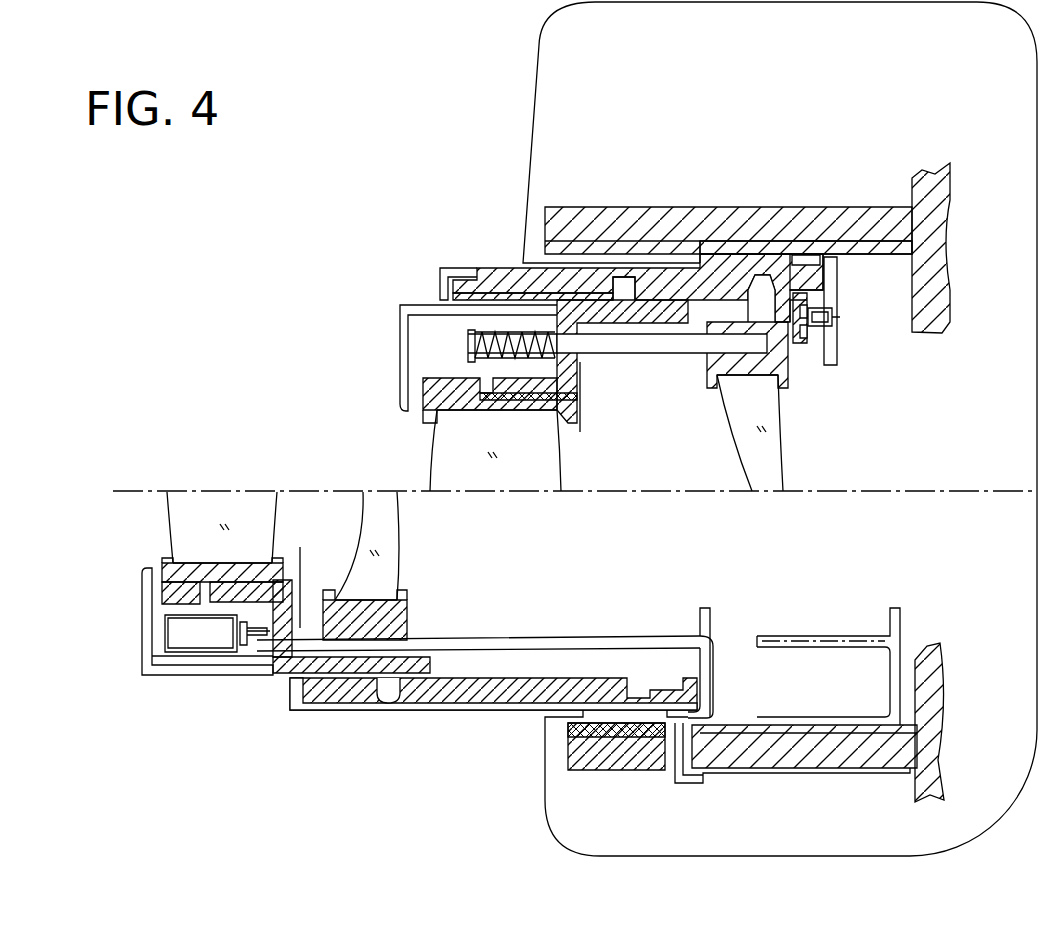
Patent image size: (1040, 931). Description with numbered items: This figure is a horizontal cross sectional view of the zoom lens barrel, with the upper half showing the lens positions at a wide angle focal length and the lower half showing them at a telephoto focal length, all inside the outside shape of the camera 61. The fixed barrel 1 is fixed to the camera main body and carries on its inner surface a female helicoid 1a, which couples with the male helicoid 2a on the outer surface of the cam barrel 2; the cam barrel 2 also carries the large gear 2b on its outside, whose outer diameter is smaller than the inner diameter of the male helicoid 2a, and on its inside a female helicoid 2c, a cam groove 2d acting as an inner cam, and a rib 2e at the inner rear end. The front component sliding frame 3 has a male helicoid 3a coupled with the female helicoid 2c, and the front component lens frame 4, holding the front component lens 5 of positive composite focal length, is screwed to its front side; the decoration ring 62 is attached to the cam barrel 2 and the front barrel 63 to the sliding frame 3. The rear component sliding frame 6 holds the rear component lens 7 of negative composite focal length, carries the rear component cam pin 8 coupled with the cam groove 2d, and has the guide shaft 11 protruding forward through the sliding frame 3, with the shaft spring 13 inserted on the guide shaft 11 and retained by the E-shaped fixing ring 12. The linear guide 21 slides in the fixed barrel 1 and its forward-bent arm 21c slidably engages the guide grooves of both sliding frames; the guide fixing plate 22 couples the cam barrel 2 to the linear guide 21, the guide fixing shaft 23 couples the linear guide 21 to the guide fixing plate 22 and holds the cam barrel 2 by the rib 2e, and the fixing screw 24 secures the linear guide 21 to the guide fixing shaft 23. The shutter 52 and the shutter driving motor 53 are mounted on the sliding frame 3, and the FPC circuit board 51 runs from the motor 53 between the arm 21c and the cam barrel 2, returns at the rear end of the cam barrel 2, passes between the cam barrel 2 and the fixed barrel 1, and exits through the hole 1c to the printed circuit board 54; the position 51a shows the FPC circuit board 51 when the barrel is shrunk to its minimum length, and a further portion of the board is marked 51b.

The fixed barrel 1 is at (698, 205).
The female helicoid 1a is at (910, 235).
The hole 1c is at (667, 748).
The cam barrel 2 is at (507, 272).
The male helicoid 2a is at (767, 307).
The large gear 2b is at (882, 247).
The female helicoid 2c is at (778, 253).
The cam groove 2d is at (572, 292).
The rib 2e is at (813, 278).
The front component sliding frame 3 is at (583, 385).
The male helicoid 3a is at (650, 290).
The front component lens frame 4 is at (423, 398).
The front component lens 5 is at (430, 465).
The rear component sliding frame 6 is at (707, 375).
The rear component lens 7 is at (743, 452).
The rear component cam pin 8 is at (813, 235).
The guide shaft 11 is at (643, 355).
The E-shaped fixing ring 12 is at (497, 338).
The shaft spring 13 is at (468, 353).
The linear guide 21 is at (838, 355).
The arm 21c is at (528, 635).
The guide fixing plate 22 is at (800, 350).
The guide fixing shaft 23 is at (813, 343).
The fixing screw 24 is at (840, 318).
The FPC circuit board 51 is at (465, 657).
The FPC circuit board at shrunk position 51a is at (847, 648).
The upright portion of lens frame 51b is at (713, 668).
The shutter 52 is at (305, 575).
The shutter driving motor 53 is at (207, 642).
The printed circuit board 54 is at (805, 778).
The outside shape of the camera 61 is at (530, 78).
The decoration ring 62 is at (455, 268).
The front barrel 63 is at (416, 305).